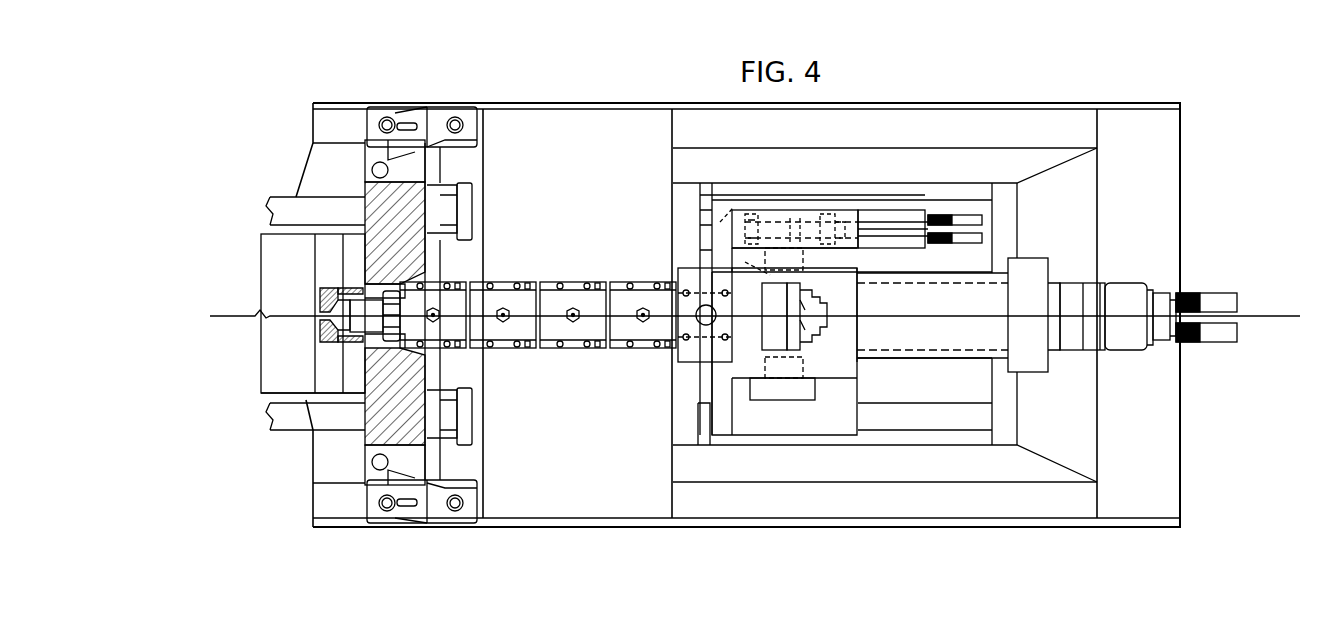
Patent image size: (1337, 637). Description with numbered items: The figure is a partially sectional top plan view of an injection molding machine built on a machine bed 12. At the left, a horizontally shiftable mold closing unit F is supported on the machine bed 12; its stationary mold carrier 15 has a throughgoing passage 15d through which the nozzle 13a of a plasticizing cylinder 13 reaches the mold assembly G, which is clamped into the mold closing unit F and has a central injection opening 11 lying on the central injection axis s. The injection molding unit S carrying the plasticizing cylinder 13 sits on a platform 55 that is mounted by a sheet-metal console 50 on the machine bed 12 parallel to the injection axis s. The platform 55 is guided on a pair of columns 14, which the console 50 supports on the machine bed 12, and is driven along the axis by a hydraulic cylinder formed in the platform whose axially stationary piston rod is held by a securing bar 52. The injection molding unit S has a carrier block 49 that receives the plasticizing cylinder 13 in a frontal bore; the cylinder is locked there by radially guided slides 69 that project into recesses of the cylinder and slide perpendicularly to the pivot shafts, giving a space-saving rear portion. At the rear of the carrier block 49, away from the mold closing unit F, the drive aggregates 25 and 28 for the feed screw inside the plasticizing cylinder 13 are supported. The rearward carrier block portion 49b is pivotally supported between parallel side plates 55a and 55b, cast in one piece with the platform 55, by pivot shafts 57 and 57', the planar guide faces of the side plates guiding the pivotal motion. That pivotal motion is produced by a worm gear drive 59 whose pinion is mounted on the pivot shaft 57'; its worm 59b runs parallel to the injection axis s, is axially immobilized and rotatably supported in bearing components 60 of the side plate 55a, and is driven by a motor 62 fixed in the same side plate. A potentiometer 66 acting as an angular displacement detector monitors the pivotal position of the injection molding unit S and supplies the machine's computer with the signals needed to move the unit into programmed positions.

The central injection opening 11 is at (320, 328).
The machine bed 12 is at (788, 532).
The plasticizing cylinder 13 is at (588, 300).
The nozzle 13a is at (320, 292).
The columns 14 is at (957, 210).
The stationary mold carrier 15 is at (432, 258).
The throughgoing passage 15d is at (425, 352).
The drive aggregate 25 is at (985, 340).
The drive aggregate 28 is at (1126, 298).
The carrier block 49 is at (698, 370).
The rearward carrier block portion 49b is at (865, 334).
The console 50 is at (1068, 445).
The securing bar 52 is at (1002, 393).
The platform 55 is at (757, 440).
The side plate 55a is at (840, 258).
The side plate 55b is at (842, 372).
The pivot shaft 57 is at (765, 337).
The pivot shaft 57' is at (718, 194).
The worm gear drive 59 is at (790, 218).
The worm 59b is at (840, 214).
The bearing components 60 is at (757, 213).
The motor 62 is at (914, 230).
The potentiometer 66 is at (784, 390).
The slides 69 is at (805, 342).
The mold closing unit F is at (290, 128).
The mold assembly G is at (326, 400).
The injection molding unit S is at (665, 235).
The central injection axis s is at (751, 318).